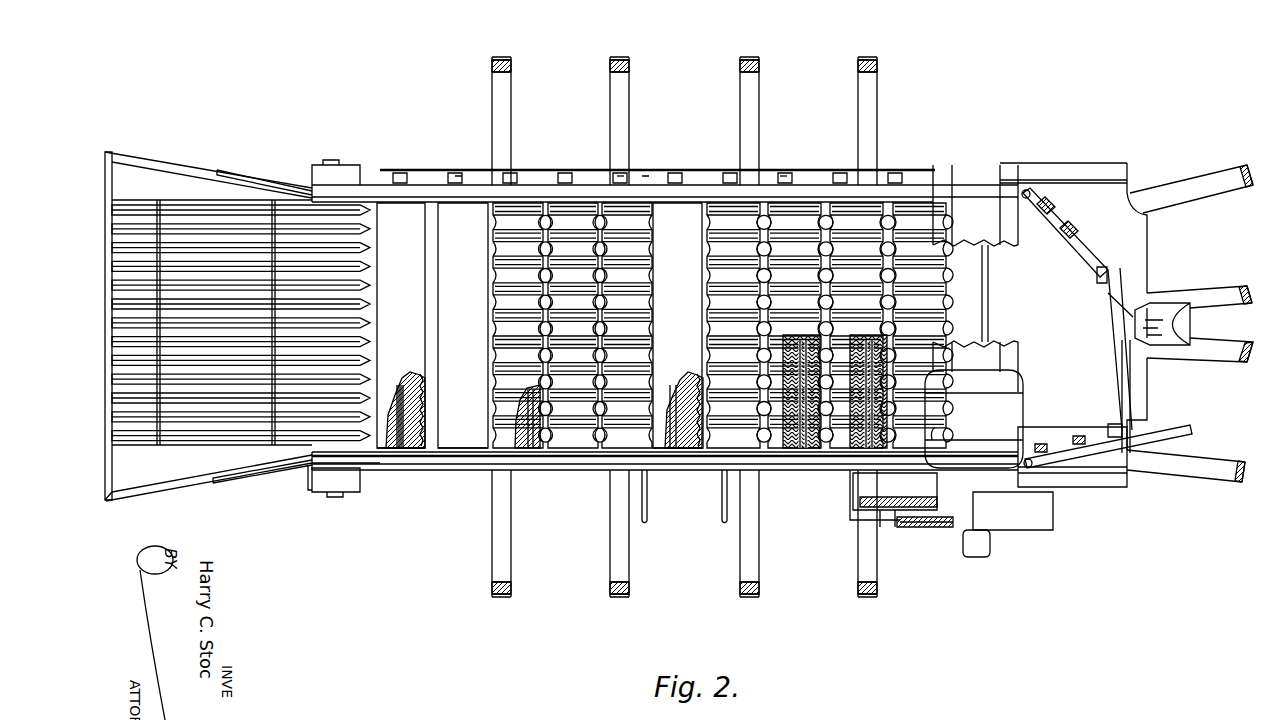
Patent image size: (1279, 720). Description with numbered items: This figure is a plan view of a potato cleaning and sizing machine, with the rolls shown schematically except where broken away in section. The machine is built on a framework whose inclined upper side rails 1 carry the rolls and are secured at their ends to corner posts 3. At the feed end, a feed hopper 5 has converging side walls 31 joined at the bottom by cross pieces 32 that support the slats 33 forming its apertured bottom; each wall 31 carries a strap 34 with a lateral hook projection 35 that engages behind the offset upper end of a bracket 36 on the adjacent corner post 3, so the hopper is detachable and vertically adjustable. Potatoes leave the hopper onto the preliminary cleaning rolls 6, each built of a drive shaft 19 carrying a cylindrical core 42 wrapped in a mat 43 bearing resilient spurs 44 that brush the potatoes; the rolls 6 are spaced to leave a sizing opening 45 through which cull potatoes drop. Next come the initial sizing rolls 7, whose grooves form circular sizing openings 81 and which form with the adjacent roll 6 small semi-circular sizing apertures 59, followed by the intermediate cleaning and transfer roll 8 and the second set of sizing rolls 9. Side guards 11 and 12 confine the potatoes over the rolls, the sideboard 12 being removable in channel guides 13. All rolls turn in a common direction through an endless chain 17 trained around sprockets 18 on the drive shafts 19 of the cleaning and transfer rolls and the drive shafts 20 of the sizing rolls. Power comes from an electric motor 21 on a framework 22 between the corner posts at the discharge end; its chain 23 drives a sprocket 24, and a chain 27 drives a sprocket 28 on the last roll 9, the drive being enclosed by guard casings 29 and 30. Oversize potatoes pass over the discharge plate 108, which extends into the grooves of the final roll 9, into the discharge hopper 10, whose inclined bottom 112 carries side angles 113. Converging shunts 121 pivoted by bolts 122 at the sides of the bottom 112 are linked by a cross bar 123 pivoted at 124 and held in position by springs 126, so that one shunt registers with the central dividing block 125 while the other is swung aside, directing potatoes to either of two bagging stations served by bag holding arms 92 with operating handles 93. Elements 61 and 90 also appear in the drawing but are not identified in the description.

The upper side rails 1 is at (665, 323).
The corner posts 3 is at (343, 165).
The feed hopper 5 is at (200, 143).
The preliminary cleaning rolls 6 is at (390, 343).
The sizing rolls 7 is at (545, 452).
The intermediate cleaning and transfer roll 8 is at (672, 341).
The second set of sizing rolls 9 is at (712, 287).
The discharge hopper 10 is at (1108, 153).
The side guard 11 is at (535, 197).
The sideboard 12 is at (605, 445).
The channel guides 13 is at (350, 473).
The endless chain 17 is at (765, 172).
The sprockets 18 is at (630, 175).
The drive shafts 19 is at (400, 168).
The drive shafts 20 is at (530, 498).
The electric motor 21 is at (1025, 412).
The framework 22 is at (955, 175).
The chain 23 is at (932, 524).
The sprocket 24 is at (900, 527).
The chain 27 is at (882, 515).
The sprocket 28 is at (858, 492).
The guard casing 29 is at (963, 545).
The guard casing 30 is at (856, 505).
The converging side walls 31 is at (152, 157).
The cross pieces 32 is at (160, 447).
The slats 33 is at (190, 213).
The strap 34 is at (265, 175).
The lateral hook projection 35 is at (340, 498).
The bracket 36 is at (325, 498).
The cylindrical core 42 is at (412, 384).
The mat 43 is at (420, 372).
The resilient spurs 44 is at (405, 392).
The sizing opening 45 is at (424, 248).
The semi-circular sizing apertures 59 is at (490, 300).
The rail block 61 is at (462, 173).
The sizing openings 81 is at (602, 273).
The pins 90 is at (722, 522).
The bag holding arms 92 is at (610, 555).
The operating handles 93 is at (612, 590).
The discharge plate 108 is at (990, 296).
The inclined bottom 112 is at (1147, 260).
The side angles 113 is at (1052, 165).
The converging shunts 121 is at (1055, 225).
The bolts 122 is at (1032, 192).
The cross bar 123 is at (1118, 333).
The pivot 124 is at (1104, 267).
The dividing block 125 is at (1195, 326).
The springs 126 is at (1060, 240).